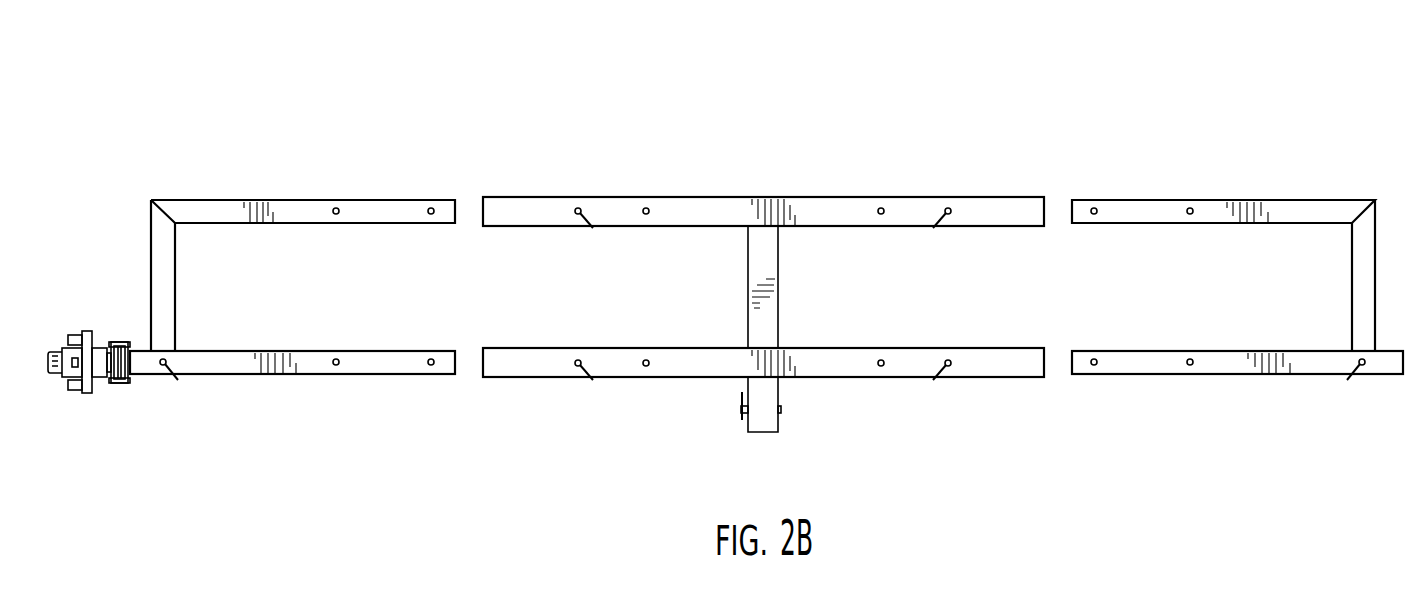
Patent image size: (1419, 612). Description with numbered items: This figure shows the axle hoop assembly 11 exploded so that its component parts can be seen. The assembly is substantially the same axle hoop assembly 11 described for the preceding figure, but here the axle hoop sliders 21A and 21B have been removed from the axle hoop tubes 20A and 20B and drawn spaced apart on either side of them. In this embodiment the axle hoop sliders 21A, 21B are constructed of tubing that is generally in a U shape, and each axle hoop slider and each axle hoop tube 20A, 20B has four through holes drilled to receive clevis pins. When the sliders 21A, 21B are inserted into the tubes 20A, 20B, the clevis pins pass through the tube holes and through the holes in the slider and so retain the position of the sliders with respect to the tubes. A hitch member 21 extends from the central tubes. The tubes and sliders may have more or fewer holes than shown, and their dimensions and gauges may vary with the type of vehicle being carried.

The axle hoop assembly 11 is at (1103, 78).
The axle hoop tube 20A is at (718, 207).
The axle hoop tube 20B is at (710, 370).
The hitch tongue 21 is at (778, 426).
The axle hoop slider 21A is at (1283, 207).
The axle hoop slider 21B is at (303, 207).